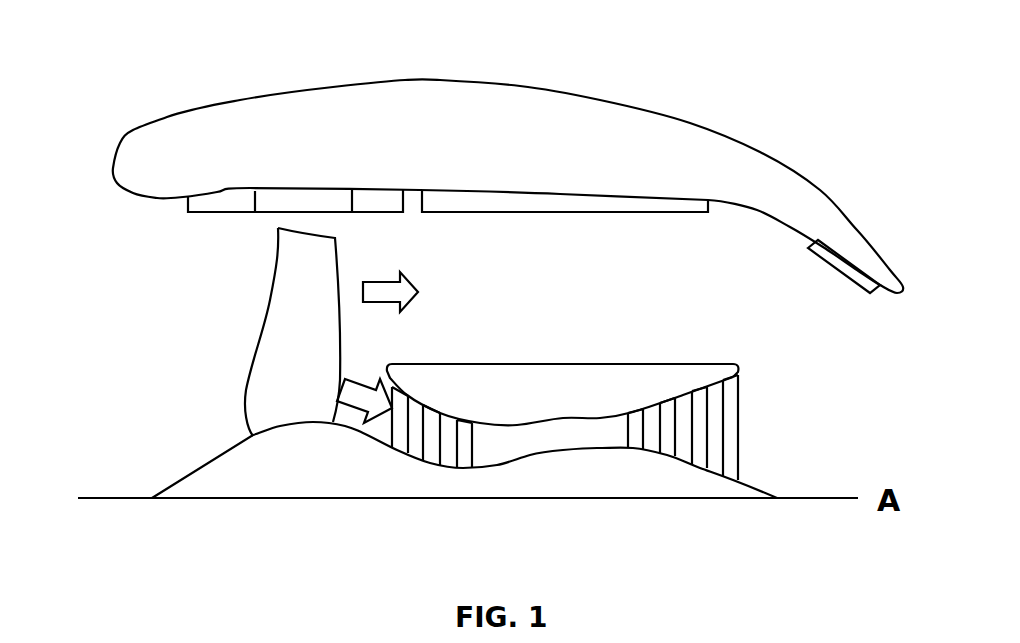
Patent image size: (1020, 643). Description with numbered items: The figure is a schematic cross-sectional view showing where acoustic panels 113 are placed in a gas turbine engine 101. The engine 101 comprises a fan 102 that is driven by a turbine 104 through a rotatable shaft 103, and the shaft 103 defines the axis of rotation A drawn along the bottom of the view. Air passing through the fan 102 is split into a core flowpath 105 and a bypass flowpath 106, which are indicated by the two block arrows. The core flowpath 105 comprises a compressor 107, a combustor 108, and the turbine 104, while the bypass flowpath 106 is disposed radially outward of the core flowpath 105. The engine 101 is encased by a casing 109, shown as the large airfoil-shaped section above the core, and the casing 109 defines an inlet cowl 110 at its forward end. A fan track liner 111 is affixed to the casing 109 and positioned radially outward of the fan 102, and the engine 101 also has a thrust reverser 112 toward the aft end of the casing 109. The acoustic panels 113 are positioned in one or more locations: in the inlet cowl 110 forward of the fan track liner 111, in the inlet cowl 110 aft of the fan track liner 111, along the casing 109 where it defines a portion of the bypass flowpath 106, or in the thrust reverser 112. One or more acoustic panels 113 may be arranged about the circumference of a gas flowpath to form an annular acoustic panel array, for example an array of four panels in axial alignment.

The gas turbine engine 101 is at (130, 67).
The fan 102 is at (267, 340).
The rotatable shaft 103 is at (603, 452).
The turbine 104 is at (753, 440).
The core flowpath 105 is at (363, 382).
The bypass flowpath 106 is at (380, 278).
The compressor 107 is at (393, 455).
The combustor 108 is at (535, 435).
The casing 109 is at (668, 108).
The inlet cowl 110 is at (108, 203).
The fan track liner 111 is at (310, 200).
The thrust reverser 112 is at (890, 222).
The acoustic panels 113 is at (218, 203).